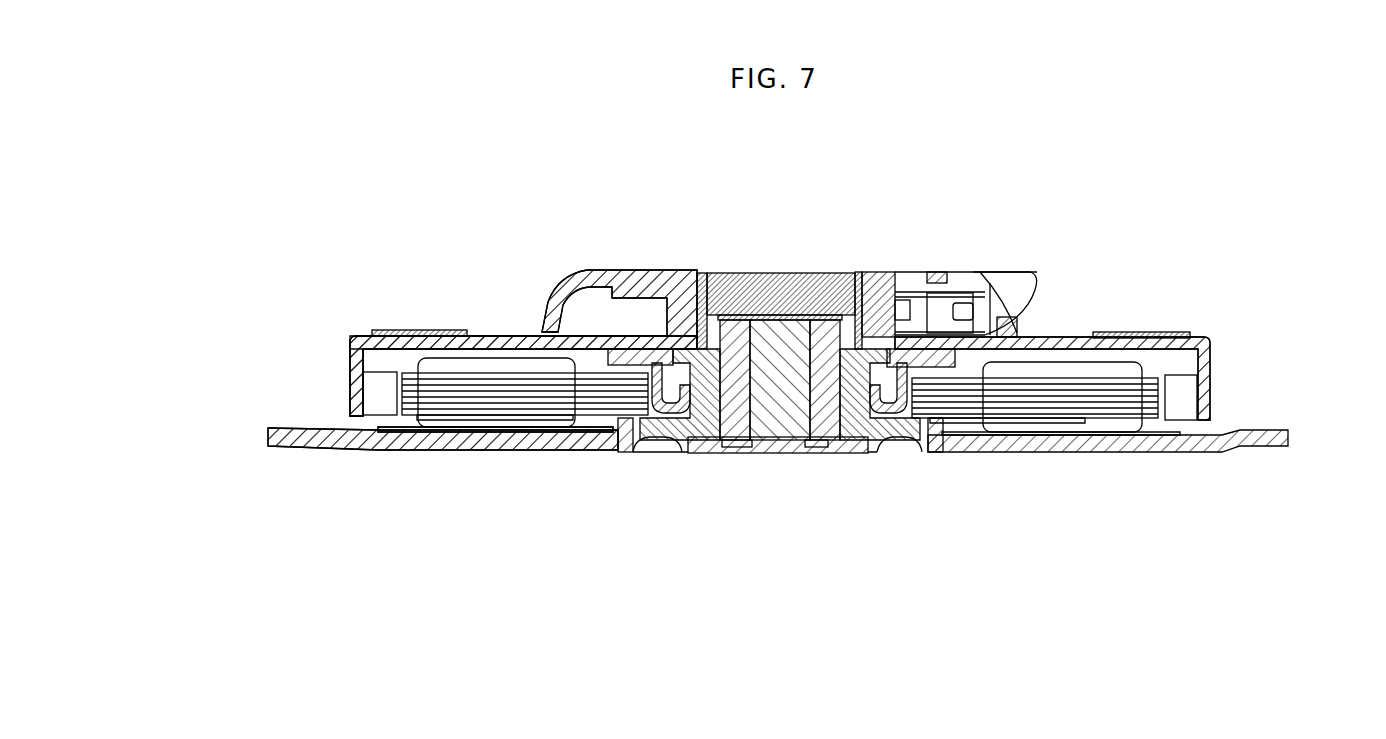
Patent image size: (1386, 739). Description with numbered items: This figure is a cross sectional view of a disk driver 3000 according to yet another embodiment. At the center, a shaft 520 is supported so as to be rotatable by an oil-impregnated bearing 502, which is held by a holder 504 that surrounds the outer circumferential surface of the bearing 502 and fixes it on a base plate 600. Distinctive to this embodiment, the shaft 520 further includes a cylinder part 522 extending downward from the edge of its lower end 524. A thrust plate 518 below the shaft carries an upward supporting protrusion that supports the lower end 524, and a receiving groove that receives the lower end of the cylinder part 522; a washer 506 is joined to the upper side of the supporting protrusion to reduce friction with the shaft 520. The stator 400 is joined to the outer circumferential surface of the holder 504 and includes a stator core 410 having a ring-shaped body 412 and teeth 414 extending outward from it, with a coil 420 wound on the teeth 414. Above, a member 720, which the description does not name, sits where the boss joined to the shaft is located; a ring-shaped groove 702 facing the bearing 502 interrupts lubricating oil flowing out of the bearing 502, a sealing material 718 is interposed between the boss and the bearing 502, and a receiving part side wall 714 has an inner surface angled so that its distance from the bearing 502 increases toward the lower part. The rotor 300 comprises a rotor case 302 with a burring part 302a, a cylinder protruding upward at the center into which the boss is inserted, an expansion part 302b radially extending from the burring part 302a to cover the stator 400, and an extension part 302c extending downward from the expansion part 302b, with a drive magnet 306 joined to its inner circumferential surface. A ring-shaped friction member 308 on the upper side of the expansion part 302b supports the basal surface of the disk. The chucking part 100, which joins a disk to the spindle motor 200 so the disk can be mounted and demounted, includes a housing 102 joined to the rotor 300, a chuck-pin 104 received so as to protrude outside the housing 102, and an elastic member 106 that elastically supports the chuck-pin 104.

The disk driver 3000 is at (1197, 192).
The chucking part 100 is at (1072, 280).
The housing 102 is at (599, 270).
The chuck-pin 104 is at (1010, 293).
The elastic member 106 is at (952, 300).
The spindle motor 200 is at (1252, 370).
The rotor 300 is at (168, 297).
The rotor case 302 is at (253, 235).
The burring part 302a is at (700, 307).
The expansion part 302b is at (523, 333).
The extension part 302c is at (352, 350).
The drive magnet 306 is at (377, 403).
The friction member 308 is at (1150, 333).
The stator 400 is at (535, 647).
The stator core 410 is at (586, 578).
The ring-shaped body 412 is at (630, 447).
The teeth 414 is at (510, 450).
The coil 420 is at (467, 450).
The oil-impregnated bearing 502 is at (833, 447).
The holder 504 is at (922, 460).
The washer 506 is at (795, 447).
The thrust plate 518 is at (850, 453).
The shaft 520 is at (693, 457).
The cylinder part 522 is at (715, 463).
The lower end 524 is at (740, 455).
The base plate 600 is at (970, 450).
The ring-shaped groove 702 is at (838, 312).
The receiving part side wall 714 is at (857, 320).
The sealing material 718 is at (700, 316).
The core 720 is at (738, 314).